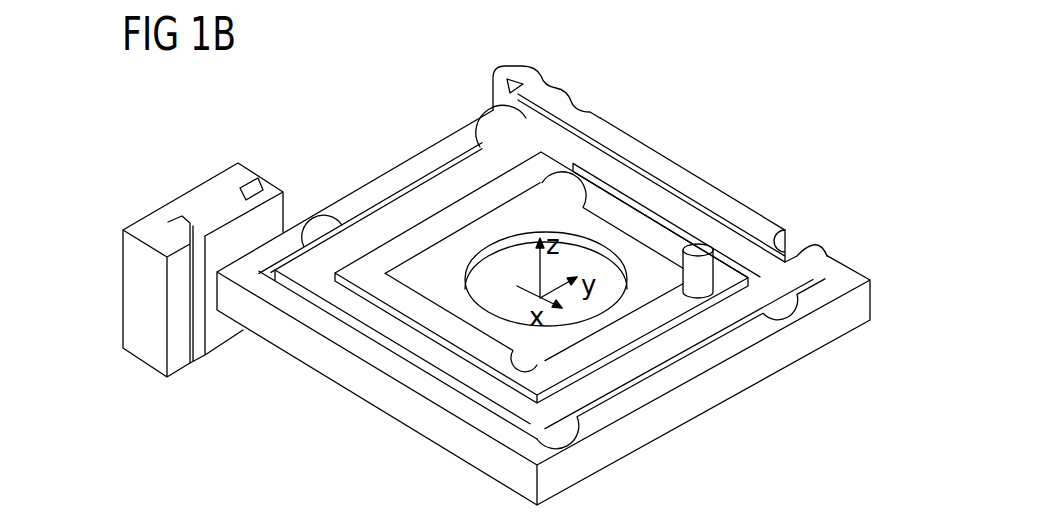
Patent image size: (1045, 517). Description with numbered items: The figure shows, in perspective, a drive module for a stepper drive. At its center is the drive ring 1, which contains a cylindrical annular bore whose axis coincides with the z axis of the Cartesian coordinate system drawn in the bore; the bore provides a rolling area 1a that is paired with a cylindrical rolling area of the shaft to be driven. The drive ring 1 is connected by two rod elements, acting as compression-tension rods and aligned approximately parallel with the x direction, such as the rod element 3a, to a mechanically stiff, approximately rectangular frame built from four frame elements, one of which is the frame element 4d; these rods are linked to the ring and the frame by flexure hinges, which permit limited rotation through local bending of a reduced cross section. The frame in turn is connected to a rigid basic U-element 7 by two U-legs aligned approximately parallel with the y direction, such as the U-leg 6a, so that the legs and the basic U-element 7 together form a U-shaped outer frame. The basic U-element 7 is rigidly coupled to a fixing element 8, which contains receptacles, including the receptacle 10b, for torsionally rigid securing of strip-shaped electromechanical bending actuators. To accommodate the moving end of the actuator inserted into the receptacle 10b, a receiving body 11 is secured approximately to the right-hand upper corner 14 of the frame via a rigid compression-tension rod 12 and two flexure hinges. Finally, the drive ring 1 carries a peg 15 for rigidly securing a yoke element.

The drive ring 1 is at (415, 257).
The rolling area 1a is at (575, 240).
The rod element 3a is at (647, 222).
The frame element 4d is at (432, 195).
The U-leg 6a is at (622, 400).
The basic U-element 7 is at (370, 388).
The fixing element 8 is at (205, 203).
The receptacle 10b is at (258, 192).
The receiving body 11 is at (530, 78).
The compression-tension rod 12 is at (610, 128).
The right-hand upper corner 14 is at (847, 273).
The peg 15 is at (683, 284).